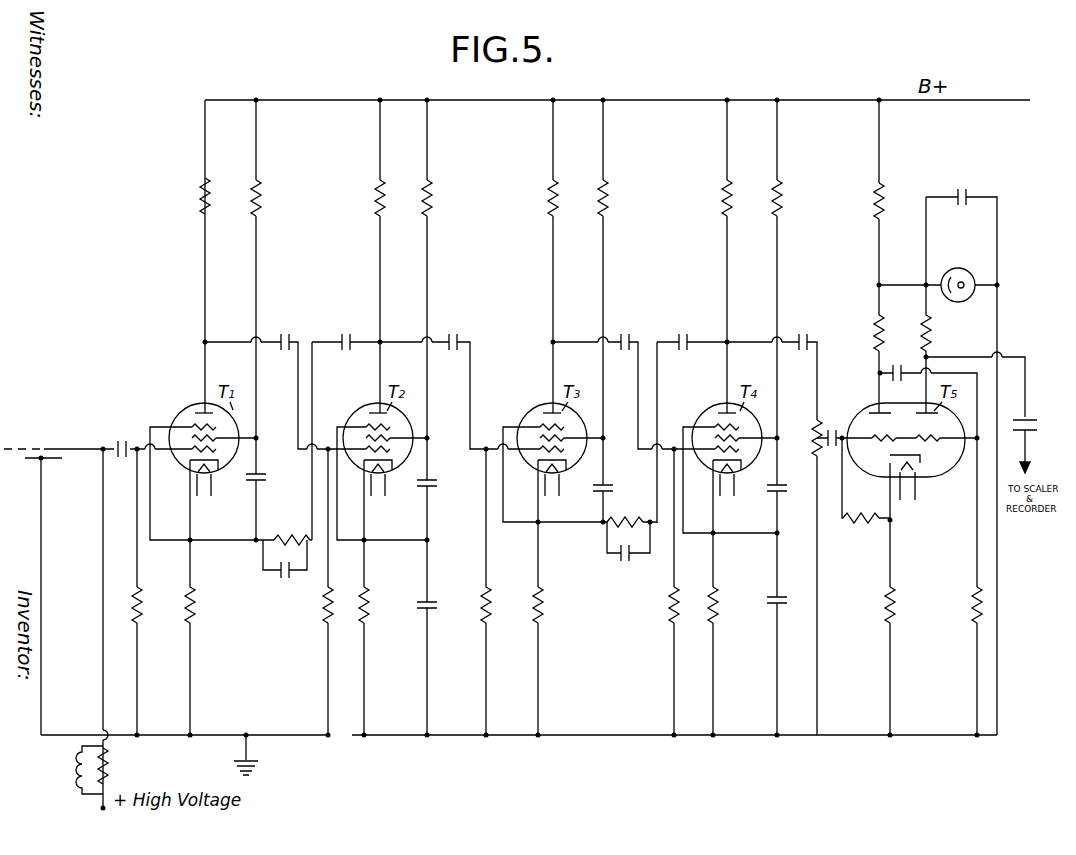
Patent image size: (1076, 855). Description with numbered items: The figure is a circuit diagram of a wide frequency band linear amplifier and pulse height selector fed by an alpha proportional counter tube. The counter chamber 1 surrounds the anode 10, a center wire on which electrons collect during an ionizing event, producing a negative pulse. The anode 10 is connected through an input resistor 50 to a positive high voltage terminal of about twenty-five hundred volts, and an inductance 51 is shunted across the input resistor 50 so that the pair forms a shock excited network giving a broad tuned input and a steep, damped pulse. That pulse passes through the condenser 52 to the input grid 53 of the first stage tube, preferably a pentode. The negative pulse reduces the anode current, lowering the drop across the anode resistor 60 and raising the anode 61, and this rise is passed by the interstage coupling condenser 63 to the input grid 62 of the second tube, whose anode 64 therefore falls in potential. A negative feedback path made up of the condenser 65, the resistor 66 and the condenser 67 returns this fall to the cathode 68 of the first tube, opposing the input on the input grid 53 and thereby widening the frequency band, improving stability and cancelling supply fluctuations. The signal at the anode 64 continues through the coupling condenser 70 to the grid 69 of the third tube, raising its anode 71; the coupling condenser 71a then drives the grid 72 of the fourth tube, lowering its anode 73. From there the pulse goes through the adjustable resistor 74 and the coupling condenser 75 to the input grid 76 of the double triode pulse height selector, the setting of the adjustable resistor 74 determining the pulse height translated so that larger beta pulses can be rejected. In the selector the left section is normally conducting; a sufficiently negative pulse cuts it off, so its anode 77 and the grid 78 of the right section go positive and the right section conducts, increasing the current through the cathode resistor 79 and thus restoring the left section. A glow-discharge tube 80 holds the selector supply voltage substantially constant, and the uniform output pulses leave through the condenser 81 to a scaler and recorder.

The counter chamber 1 is at (26, 437).
The anode 10 is at (52, 448).
The input resistor 50 is at (110, 772).
The inductance 51 is at (72, 767).
The condenser 52 is at (122, 438).
The input grid 53 is at (196, 442).
The anode resistor 60 is at (203, 195).
The anode 61 is at (196, 411).
The input grid 62 is at (372, 456).
The interstage coupling condenser 63 is at (286, 334).
The anode 64 is at (372, 412).
The condenser 65 is at (347, 334).
The resistor 66 is at (280, 537).
The condenser 67 is at (283, 574).
The cathode 68 is at (190, 475).
The grid 69 is at (565, 452).
The coupling condenser 70 is at (457, 335).
The anode 71 is at (544, 411).
The coupling condenser 71a is at (627, 334).
The grid 72 is at (716, 454).
The anode 73 is at (730, 412).
The adjustable resistor 74 is at (822, 424).
The coupling condenser 75 is at (833, 432).
The input grid 76 is at (888, 444).
The anode 77 is at (876, 411).
The grid 78 is at (933, 444).
The cathode resistor 79 is at (895, 604).
The glow-discharge tube 80 is at (960, 270).
The condenser 81 is at (1028, 421).